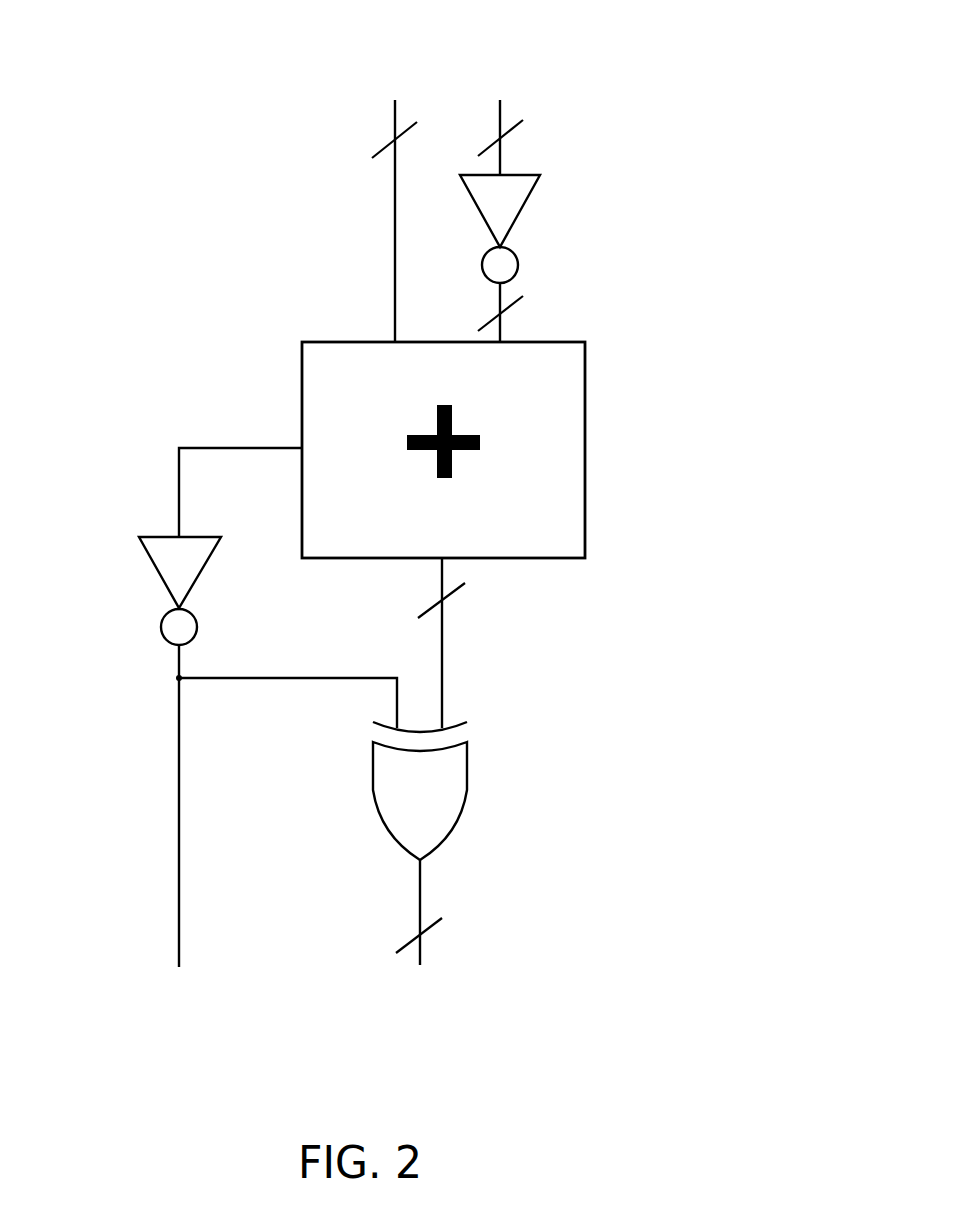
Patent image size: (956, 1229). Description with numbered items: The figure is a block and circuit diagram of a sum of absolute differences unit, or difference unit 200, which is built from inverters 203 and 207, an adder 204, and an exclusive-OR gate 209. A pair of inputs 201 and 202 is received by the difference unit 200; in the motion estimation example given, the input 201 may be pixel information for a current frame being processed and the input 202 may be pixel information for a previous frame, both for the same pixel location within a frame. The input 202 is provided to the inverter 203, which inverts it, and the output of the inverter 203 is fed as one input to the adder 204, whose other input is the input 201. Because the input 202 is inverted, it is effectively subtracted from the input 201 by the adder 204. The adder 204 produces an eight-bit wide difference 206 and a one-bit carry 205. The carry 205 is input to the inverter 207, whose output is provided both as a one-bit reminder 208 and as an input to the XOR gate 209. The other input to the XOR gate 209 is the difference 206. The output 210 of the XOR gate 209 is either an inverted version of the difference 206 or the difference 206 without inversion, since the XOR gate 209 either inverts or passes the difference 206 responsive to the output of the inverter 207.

The sum of absolute differences unit 200 is at (688, 65).
The input 201 is at (395, 180).
The input 202 is at (500, 104).
The inverter 203 is at (540, 175).
The adder 204 is at (585, 342).
The carry 205 is at (179, 480).
The difference 206 is at (442, 649).
The inverter 207 is at (200, 574).
The reminder 208 is at (179, 880).
The exclusive-OR gate 209 is at (467, 786).
The output 210 is at (420, 898).